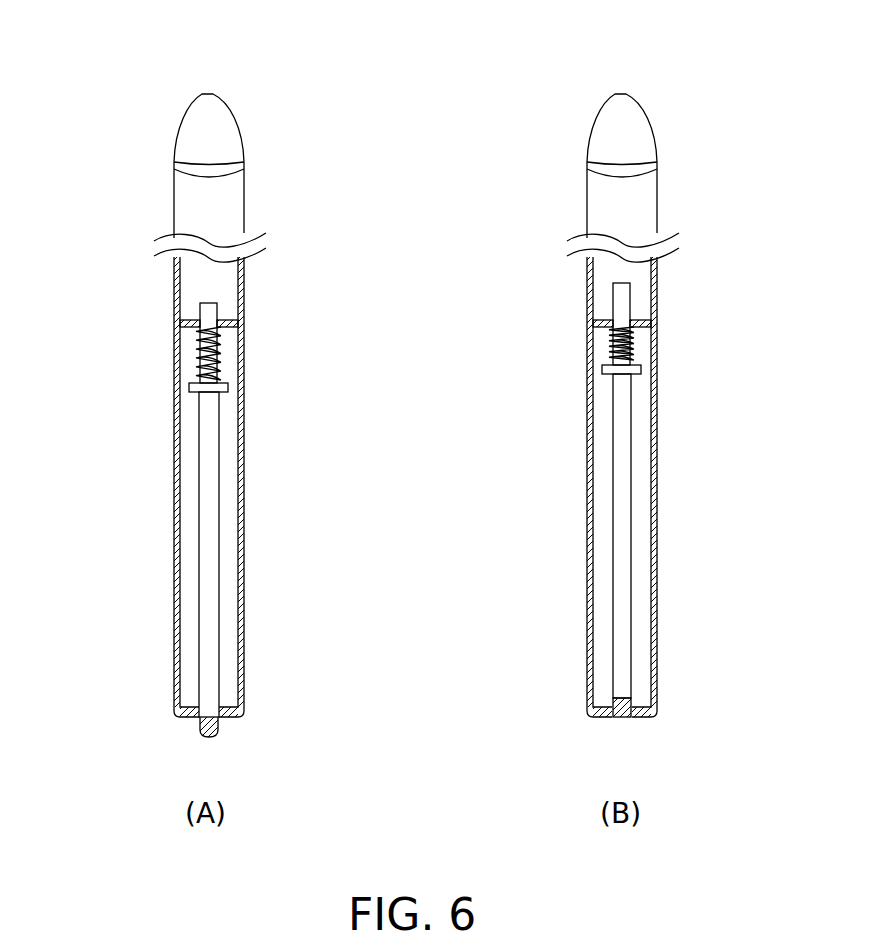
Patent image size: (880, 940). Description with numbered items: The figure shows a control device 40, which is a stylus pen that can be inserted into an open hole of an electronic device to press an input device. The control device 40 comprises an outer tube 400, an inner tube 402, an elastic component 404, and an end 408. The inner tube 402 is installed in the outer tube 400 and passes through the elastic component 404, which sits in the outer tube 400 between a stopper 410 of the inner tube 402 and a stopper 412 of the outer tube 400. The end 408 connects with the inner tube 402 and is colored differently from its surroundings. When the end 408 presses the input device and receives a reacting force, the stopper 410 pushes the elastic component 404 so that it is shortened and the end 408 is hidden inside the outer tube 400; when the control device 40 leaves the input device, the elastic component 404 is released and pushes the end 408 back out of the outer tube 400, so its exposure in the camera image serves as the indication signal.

In FIG. 6A, the control device 40 is at (202, 393).
In FIG. 6B, the control device 40 is at (615, 393).
In FIG. 6A, the outer tube 400 is at (241, 431).
In FIG. 6B, the outer tube 400 is at (656, 422).
In FIG. 6A, the inner tube 402 is at (218, 503).
In FIG. 6B, the inner tube 402 is at (631, 503).
In FIG. 6A, the elastic component 404 is at (222, 347).
In FIG. 6B, the elastic component 404 is at (640, 338).
In FIG. 6A, the end 408 is at (215, 730).
In FIG. 6B, the end 408 is at (620, 717).
In FIG. 6A, the stopper of the inner tube 410 is at (226, 388).
In FIG. 6B, the stopper of the inner tube 410 is at (641, 369).
In FIG. 6A, the stopper of the outer tube 412 is at (236, 318).
In FIG. 6B, the stopper of the outer tube 412 is at (650, 318).